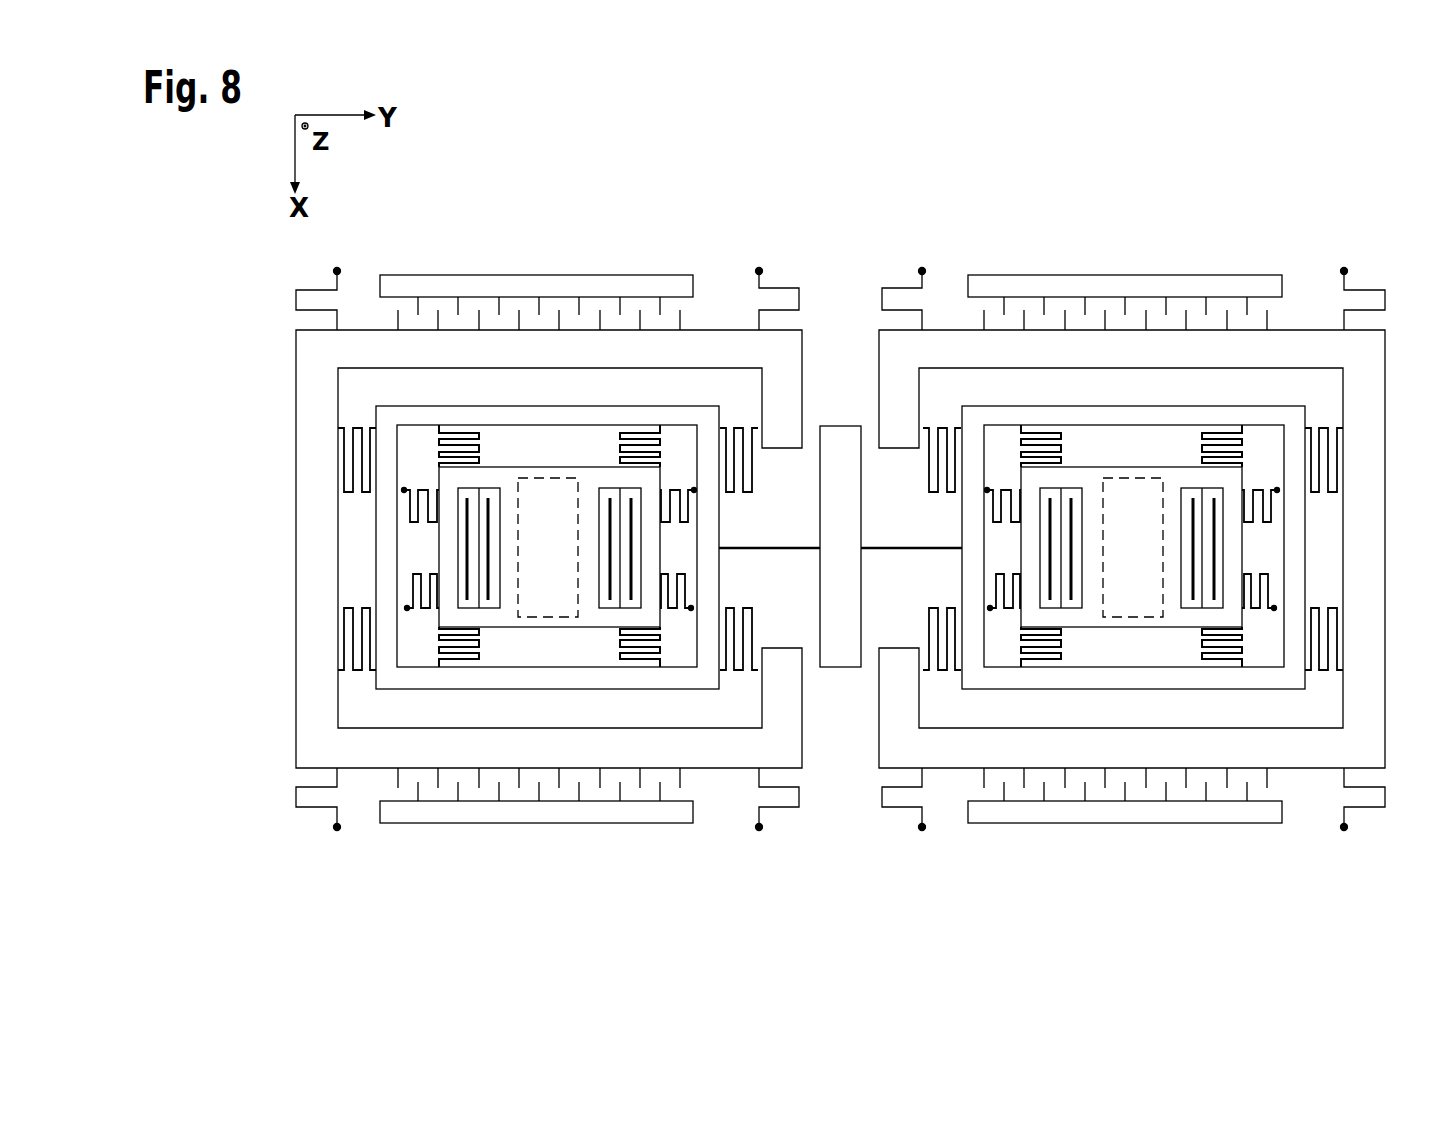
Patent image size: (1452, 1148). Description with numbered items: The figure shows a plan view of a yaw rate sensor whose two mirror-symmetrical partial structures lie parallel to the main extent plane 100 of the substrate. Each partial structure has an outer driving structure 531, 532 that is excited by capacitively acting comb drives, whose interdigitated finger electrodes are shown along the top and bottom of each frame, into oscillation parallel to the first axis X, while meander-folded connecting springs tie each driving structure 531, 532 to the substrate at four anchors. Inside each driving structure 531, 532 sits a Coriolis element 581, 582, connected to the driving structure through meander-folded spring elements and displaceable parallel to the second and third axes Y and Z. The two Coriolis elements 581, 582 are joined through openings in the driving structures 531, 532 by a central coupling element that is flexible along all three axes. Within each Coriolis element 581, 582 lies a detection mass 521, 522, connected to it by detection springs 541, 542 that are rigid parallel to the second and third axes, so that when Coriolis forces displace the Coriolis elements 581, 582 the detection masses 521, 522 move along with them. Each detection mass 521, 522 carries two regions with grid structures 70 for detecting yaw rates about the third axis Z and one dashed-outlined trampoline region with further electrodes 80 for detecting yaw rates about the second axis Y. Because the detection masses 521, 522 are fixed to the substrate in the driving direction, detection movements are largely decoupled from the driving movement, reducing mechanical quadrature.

The main extent plane 100 is at (377, 189).
The first driving structure 531 is at (405, 348).
The second driving structure 532 is at (1192, 745).
The first Coriolis element 581 is at (493, 417).
The second Coriolis element 582 is at (1071, 677).
The first detection spring 541 is at (645, 440).
The second detection spring 542 is at (1045, 445).
The first detection mass 521 is at (594, 617).
The second detection mass 522 is at (1236, 540).
The grid structure 70 is at (491, 613).
The further electrodes 80 is at (561, 604).